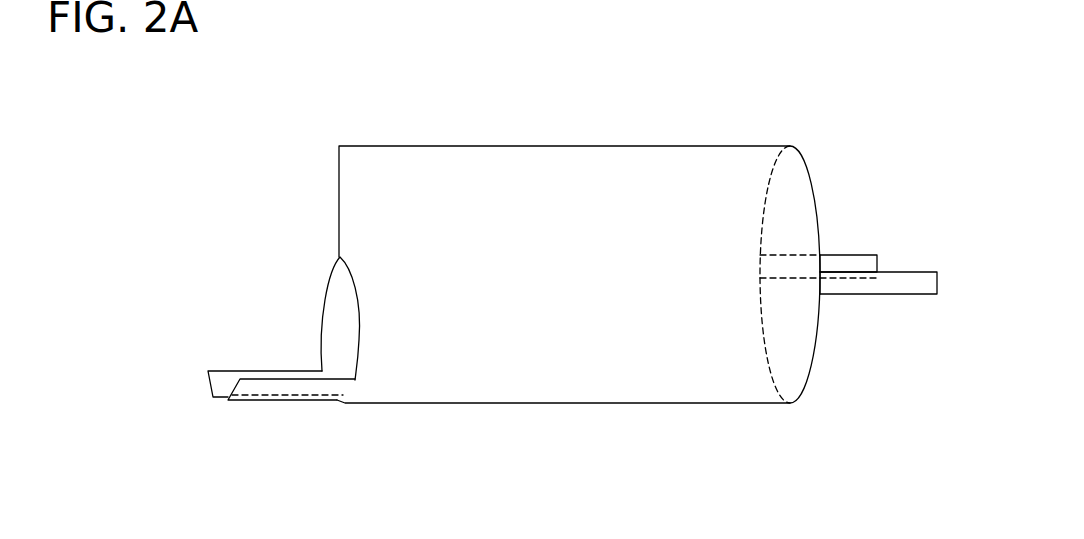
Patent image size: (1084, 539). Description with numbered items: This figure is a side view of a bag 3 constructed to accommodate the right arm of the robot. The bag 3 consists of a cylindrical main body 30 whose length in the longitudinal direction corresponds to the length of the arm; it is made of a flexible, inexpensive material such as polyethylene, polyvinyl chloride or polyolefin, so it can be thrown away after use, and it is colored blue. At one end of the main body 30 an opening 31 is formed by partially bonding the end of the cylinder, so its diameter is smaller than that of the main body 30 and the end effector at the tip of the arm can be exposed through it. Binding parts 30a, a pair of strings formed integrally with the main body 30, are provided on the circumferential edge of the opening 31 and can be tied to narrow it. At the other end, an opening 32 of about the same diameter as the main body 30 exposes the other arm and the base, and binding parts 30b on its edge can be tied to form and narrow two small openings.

The bag 3 is at (648, 145).
The main body 30 is at (709, 146).
The binding parts 30a is at (258, 370).
The binding parts 30b is at (853, 252).
The opening 31 is at (337, 302).
The opening 32 is at (797, 205).